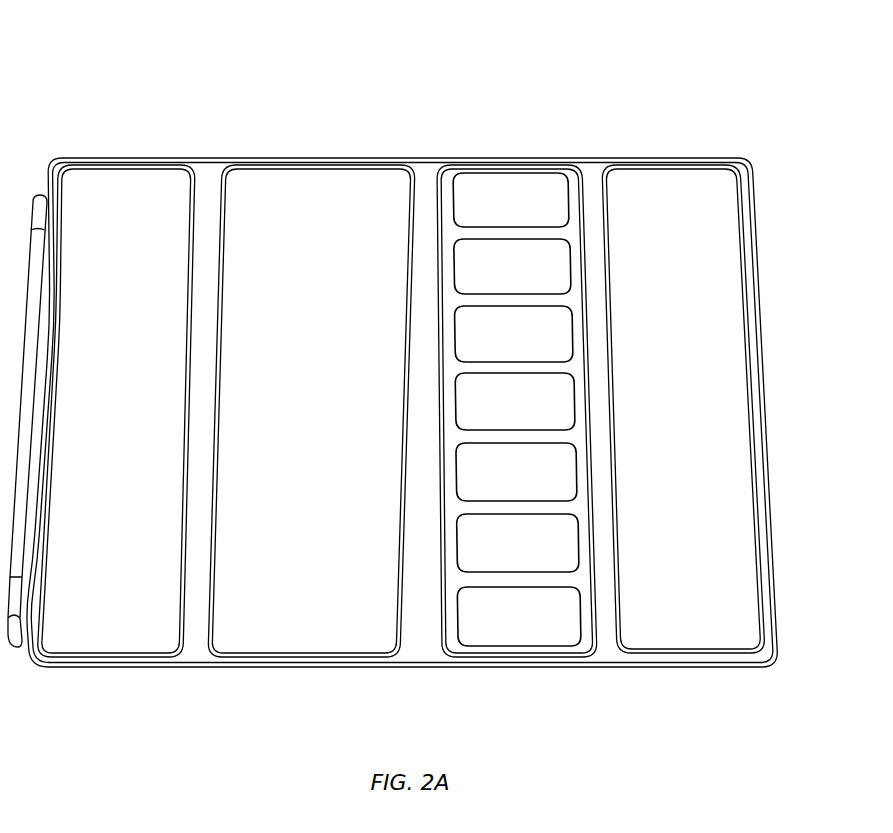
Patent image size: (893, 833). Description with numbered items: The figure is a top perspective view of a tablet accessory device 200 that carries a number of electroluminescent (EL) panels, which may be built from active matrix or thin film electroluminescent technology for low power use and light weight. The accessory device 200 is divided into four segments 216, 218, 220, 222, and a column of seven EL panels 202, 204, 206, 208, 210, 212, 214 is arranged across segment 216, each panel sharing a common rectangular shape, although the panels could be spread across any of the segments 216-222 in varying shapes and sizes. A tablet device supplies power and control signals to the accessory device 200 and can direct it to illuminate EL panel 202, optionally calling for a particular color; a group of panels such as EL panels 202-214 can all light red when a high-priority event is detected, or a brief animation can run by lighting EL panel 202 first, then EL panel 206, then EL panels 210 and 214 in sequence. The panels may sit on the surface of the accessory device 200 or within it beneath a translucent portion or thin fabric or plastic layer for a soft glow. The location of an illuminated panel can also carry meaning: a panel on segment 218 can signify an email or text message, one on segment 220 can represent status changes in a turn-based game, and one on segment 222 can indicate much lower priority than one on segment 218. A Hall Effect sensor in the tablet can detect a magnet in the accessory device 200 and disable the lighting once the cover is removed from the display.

The tablet accessory device 200 is at (88, 57).
The EL panel 202 is at (518, 616).
The EL panel 204 is at (518, 543).
The EL panel 206 is at (516, 472).
The EL panel 208 is at (515, 401).
The EL panel 210 is at (514, 334).
The EL panel 212 is at (512, 266).
The EL panel 214 is at (511, 200).
The segment 216 is at (472, 153).
The segment 218 is at (637, 152).
The segment 220 is at (327, 153).
The segment 222 is at (143, 155).